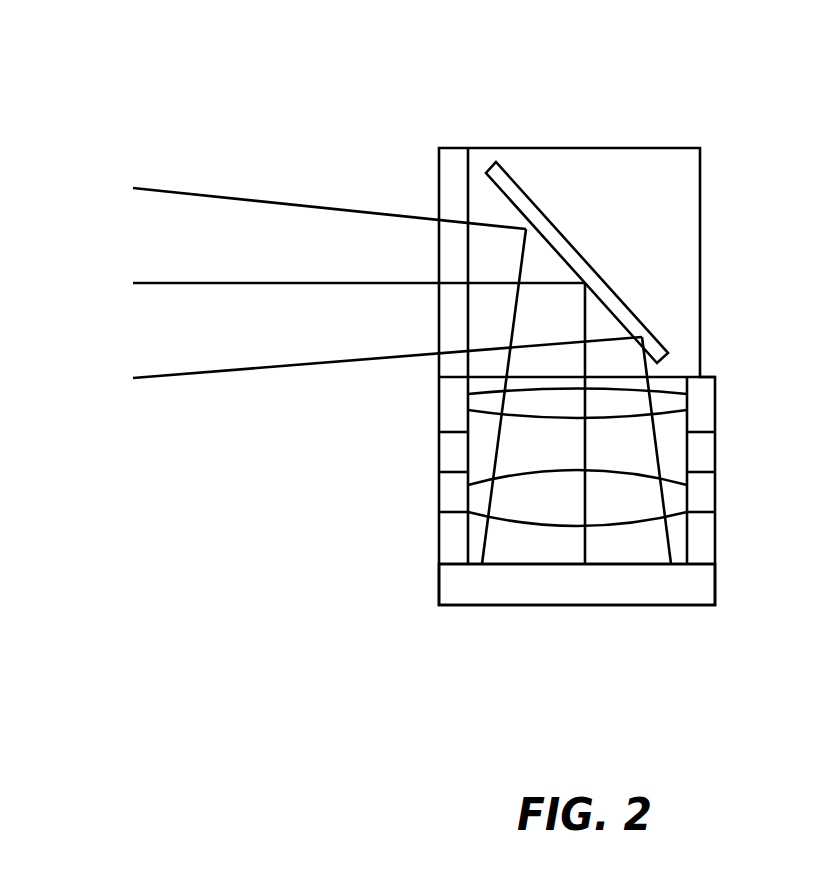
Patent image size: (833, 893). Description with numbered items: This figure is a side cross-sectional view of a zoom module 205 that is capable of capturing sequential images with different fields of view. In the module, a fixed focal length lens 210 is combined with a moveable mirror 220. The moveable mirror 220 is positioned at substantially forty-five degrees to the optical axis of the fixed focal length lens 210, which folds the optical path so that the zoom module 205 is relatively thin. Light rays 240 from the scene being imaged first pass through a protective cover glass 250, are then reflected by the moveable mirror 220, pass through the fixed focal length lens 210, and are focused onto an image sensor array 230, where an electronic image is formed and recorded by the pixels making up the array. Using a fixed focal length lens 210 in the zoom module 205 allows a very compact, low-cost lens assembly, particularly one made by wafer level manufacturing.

The zoom module 205 is at (728, 98).
The fixed focal length lens 210 is at (715, 377).
The moveable mirror 220 is at (624, 296).
The image sensor array 230 is at (672, 590).
The light rays 240 is at (123, 190).
The protective cover glass 250 is at (448, 180).